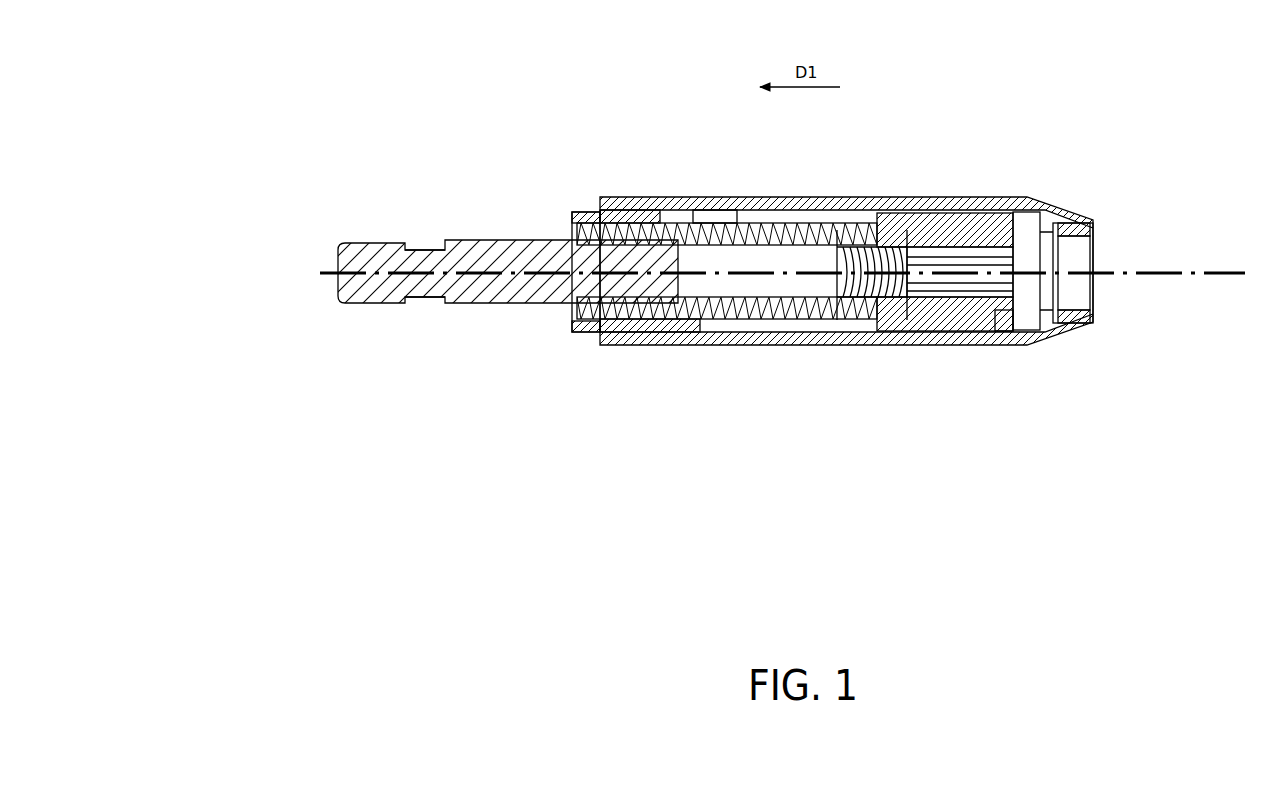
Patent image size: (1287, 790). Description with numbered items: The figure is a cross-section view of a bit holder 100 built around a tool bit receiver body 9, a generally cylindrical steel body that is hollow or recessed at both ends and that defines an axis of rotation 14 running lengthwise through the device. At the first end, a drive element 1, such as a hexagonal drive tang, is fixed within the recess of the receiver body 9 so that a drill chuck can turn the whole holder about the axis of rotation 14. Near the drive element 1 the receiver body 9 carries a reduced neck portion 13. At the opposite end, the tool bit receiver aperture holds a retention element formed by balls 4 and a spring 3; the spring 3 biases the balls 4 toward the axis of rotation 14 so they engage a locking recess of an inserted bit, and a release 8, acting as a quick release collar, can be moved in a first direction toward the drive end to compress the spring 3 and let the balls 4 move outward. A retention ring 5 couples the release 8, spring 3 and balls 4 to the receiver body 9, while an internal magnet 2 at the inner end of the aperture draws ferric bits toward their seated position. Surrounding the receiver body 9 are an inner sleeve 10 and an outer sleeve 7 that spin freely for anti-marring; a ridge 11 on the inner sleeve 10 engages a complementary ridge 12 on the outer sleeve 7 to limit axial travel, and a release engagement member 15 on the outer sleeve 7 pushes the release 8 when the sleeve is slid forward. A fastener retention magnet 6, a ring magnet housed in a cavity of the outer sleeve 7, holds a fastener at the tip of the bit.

The bit holder 100 is at (1150, 558).
The drive element 1 is at (477, 235).
The internal magnet 2 is at (810, 204).
The spring 3 is at (905, 211).
The balls 4 is at (988, 211).
The retention ring 5 is at (1013, 222).
The fastener retention magnet 6 is at (1083, 243).
The outer sleeve 7 is at (1053, 345).
The release 8 is at (940, 340).
The tool bit receiver body 9 is at (762, 322).
The inner sleeve 10 is at (578, 342).
The ridge 11 is at (685, 333).
The ridge 12 is at (622, 209).
The pin neck 13 is at (410, 250).
The axis of rotation 14 is at (322, 270).
The release engagement member 15 is at (1010, 327).